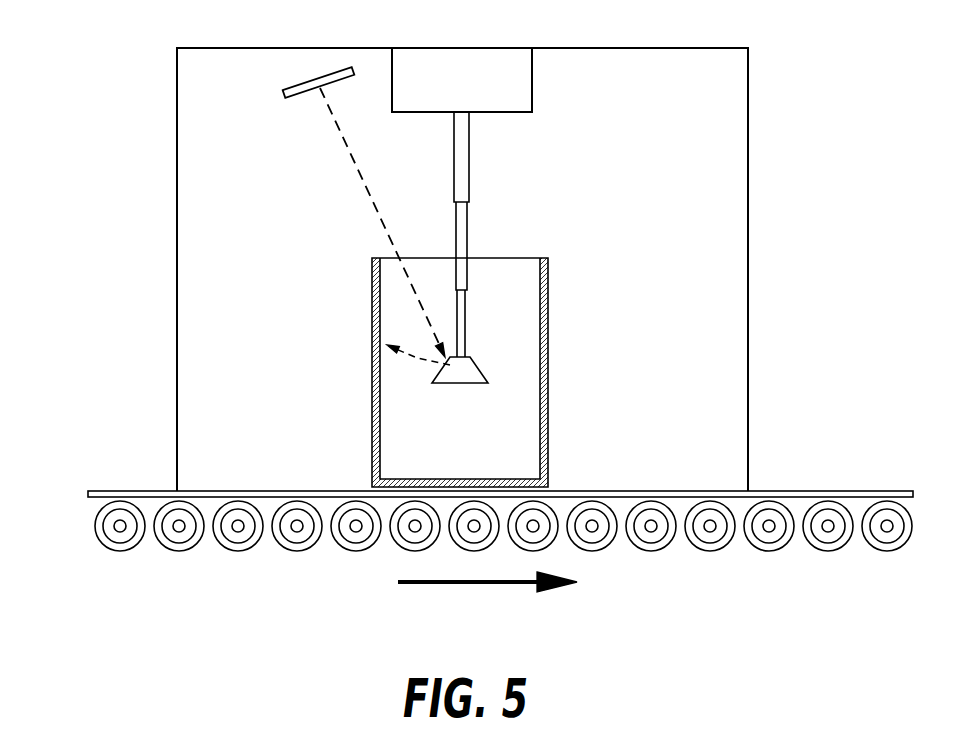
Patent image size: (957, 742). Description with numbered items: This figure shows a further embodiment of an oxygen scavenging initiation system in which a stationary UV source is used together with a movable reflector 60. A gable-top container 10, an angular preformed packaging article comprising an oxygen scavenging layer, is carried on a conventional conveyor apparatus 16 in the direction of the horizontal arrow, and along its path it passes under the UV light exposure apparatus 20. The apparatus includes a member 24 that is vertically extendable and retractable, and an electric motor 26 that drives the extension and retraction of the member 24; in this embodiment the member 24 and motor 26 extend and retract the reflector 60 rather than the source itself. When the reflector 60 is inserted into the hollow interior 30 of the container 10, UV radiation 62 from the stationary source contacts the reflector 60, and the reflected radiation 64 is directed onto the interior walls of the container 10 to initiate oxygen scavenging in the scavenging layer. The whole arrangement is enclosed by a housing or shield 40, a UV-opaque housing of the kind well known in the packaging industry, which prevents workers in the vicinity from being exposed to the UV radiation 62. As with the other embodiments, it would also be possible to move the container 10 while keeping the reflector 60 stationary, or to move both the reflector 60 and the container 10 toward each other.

The gable-top container 10 is at (583, 305).
The conveyor apparatus 16 is at (137, 577).
The UV light exposure apparatus 20 is at (291, 102).
The member 24 is at (468, 163).
The electric motor 26 is at (533, 91).
The hollow interior 30 is at (413, 427).
The housing or shield 40 is at (748, 313).
The reflector 60 is at (468, 368).
The UV radiation 62 is at (360, 187).
The reflected radiation 64 is at (417, 358).